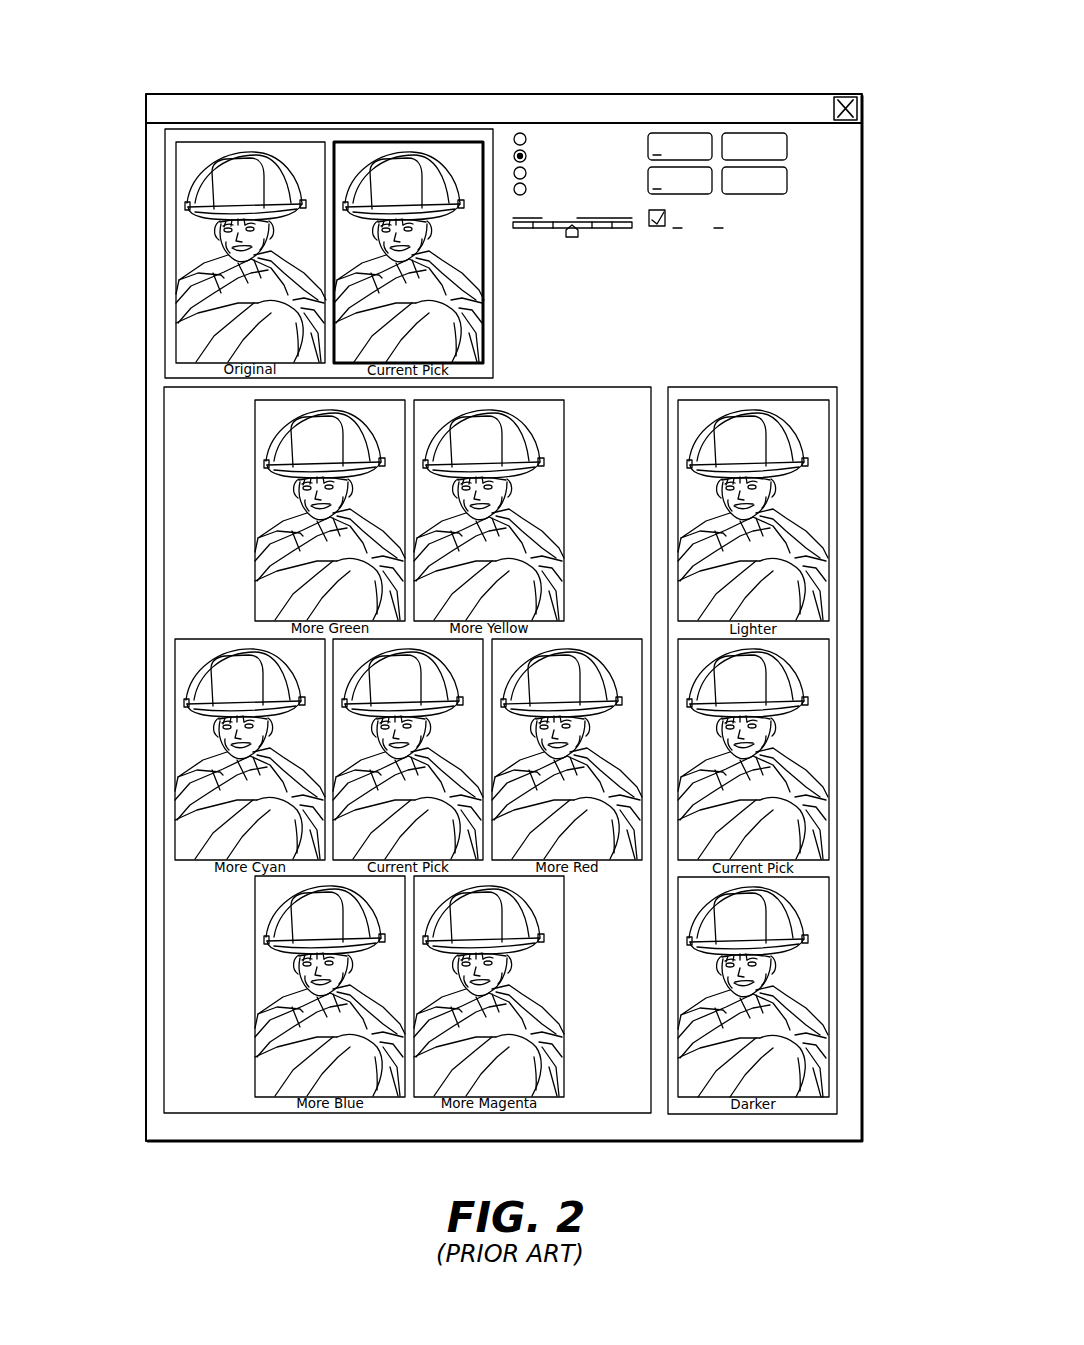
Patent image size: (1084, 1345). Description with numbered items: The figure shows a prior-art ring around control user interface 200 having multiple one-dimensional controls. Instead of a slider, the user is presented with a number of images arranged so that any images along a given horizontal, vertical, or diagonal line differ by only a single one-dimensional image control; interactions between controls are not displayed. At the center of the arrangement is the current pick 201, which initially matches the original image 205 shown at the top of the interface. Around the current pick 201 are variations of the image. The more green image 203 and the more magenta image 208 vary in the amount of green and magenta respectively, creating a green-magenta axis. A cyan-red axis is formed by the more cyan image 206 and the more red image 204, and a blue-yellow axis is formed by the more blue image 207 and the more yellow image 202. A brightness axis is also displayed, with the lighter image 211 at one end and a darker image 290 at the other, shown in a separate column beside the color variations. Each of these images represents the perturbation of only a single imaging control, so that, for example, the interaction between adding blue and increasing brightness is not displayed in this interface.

The 1-d ring around control user interface 200 is at (580, 51).
The current pick 201 is at (388, 142).
The more yellow image 202 is at (564, 448).
The more green image 203 is at (255, 460).
The more red image 204 is at (588, 639).
The original image 205 is at (176, 210).
The more cyan image 206 is at (175, 745).
The more blue image 207 is at (287, 1097).
The more magenta image 208 is at (428, 1097).
The lighter image 211 is at (829, 535).
The darker variation image 290 is at (829, 987).